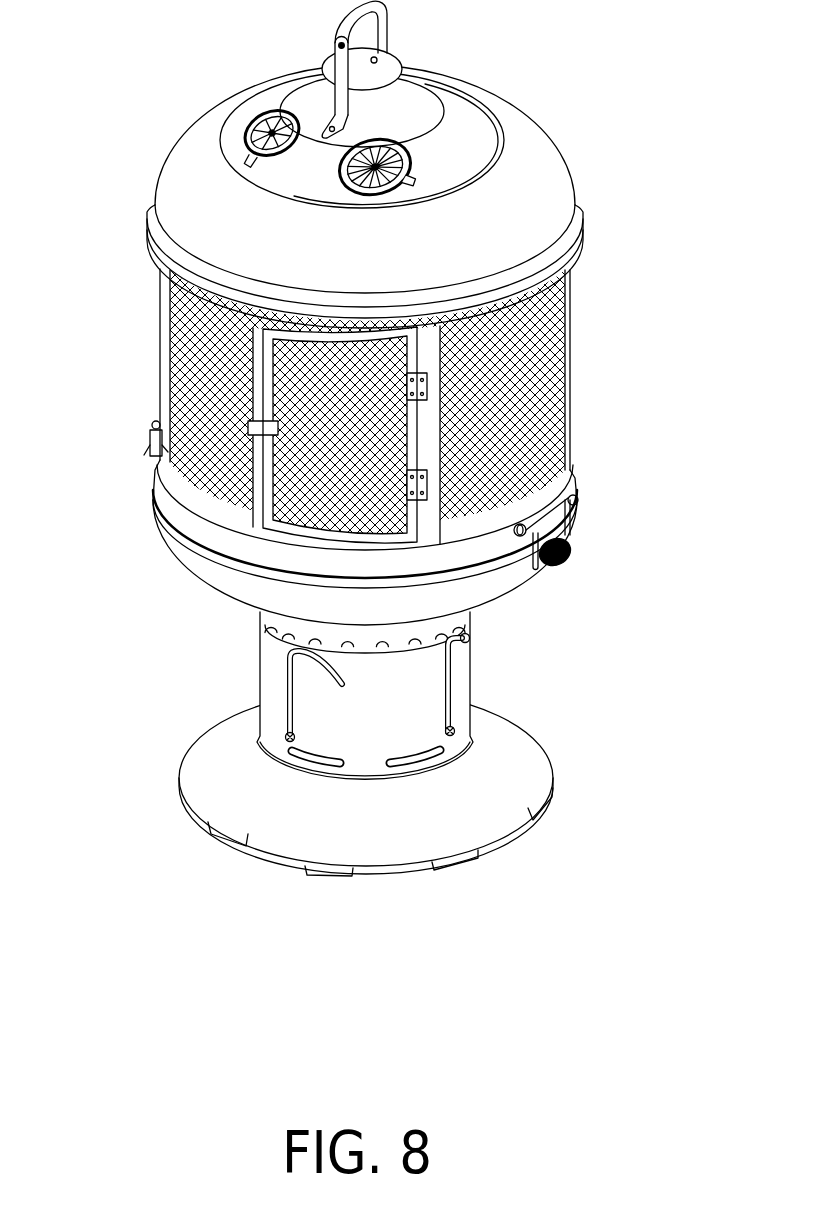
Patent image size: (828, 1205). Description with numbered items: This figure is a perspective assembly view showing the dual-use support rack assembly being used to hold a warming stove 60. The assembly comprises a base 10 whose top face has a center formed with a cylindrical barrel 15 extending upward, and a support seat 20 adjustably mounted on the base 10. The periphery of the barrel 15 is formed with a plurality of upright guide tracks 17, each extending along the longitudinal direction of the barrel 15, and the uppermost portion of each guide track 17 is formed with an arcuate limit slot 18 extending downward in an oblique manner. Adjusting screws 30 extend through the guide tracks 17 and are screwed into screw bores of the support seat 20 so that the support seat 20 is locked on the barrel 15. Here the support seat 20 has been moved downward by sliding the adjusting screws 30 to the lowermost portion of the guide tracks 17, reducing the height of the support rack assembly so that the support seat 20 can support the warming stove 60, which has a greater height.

The base 10 is at (525, 775).
The cylindrical barrel 15 is at (372, 750).
The upright guide tracks 17 is at (290, 677).
The arcuate limit slot 18 is at (260, 622).
The support seat 20 is at (465, 640).
The adjusting screws 30 is at (286, 738).
The warming stove 60 is at (527, 200).